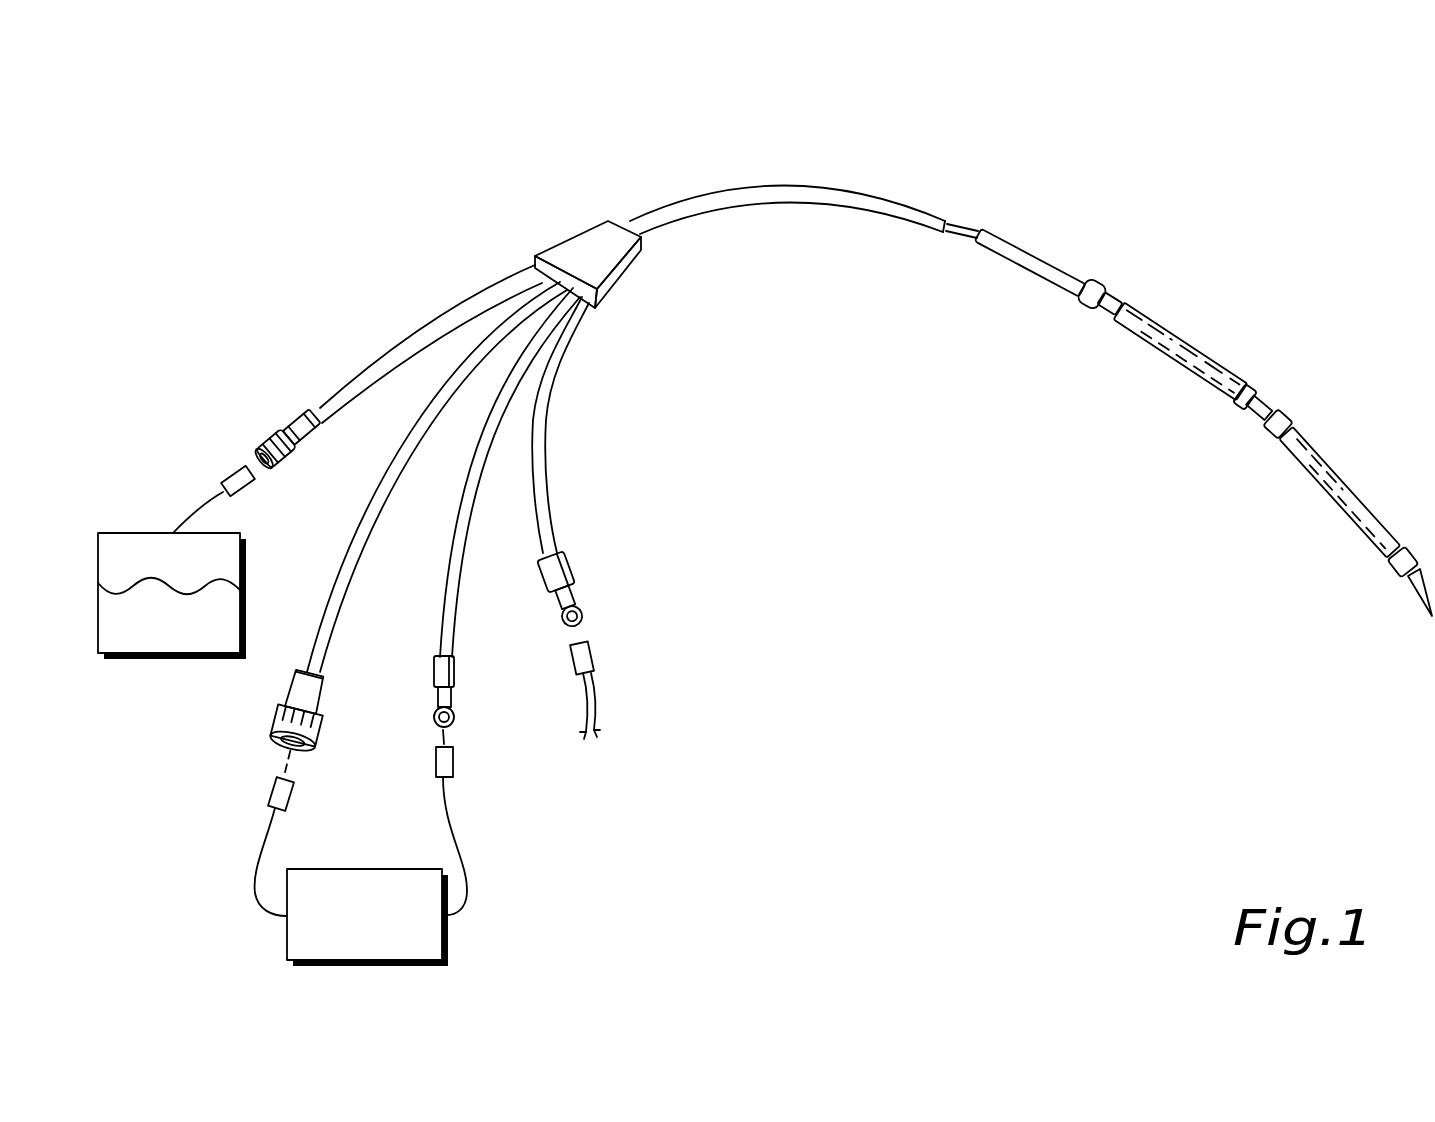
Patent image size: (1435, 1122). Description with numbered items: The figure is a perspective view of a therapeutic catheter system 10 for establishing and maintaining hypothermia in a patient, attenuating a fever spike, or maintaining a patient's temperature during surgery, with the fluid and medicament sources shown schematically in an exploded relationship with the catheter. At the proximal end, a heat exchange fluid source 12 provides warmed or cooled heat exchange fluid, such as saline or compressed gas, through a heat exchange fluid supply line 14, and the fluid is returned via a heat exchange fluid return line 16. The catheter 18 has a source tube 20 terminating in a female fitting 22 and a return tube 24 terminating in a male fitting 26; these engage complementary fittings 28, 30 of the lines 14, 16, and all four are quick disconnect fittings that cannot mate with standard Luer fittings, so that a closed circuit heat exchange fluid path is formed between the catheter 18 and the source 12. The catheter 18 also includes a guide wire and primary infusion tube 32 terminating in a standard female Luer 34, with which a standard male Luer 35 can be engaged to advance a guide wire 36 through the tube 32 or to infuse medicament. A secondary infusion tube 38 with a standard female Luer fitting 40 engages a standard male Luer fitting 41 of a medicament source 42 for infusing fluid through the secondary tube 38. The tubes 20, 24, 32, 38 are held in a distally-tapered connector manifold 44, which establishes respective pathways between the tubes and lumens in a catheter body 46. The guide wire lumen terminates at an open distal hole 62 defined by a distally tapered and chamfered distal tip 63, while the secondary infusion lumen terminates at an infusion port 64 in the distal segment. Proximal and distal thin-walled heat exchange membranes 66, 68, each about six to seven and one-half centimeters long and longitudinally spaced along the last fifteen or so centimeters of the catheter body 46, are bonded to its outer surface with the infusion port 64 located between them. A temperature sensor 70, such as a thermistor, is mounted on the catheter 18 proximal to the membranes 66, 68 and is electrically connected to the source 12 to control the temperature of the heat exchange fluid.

The therapeutic catheter system 10 is at (948, 122).
The heat exchange fluid source 12 is at (447, 943).
The heat exchange fluid supply line 14 is at (458, 847).
The heat exchange fluid return line 16 is at (258, 862).
The catheter 18 is at (745, 420).
The source tube 20 is at (447, 586).
The female fitting 22 is at (437, 675).
The return tube 24 is at (373, 506).
The male fitting 26 is at (278, 717).
The complementary fitting 28 is at (455, 762).
The complementary fitting 30 is at (295, 796).
The guide wire and primary infusion tube 32 is at (548, 518).
The standard female Luer 34 is at (565, 600).
The standard male Luer 35 is at (588, 656).
The guide wire 36 is at (596, 715).
The secondary infusion tube 38 is at (378, 360).
The standard female Luer fitting 40 is at (283, 440).
The standard male Luer fitting 41 is at (242, 472).
The medicament source 42 is at (132, 533).
The connector manifold 44 is at (607, 297).
The catheter body 46 is at (767, 196).
The open distal hole 62 is at (1433, 617).
The distal tip 63 is at (1397, 572).
The infusion port 64 is at (1278, 415).
The proximal heat exchange membrane 66 is at (1180, 330).
The distal heat exchange membrane 68 is at (1327, 470).
The temperature sensor 70 is at (965, 237).